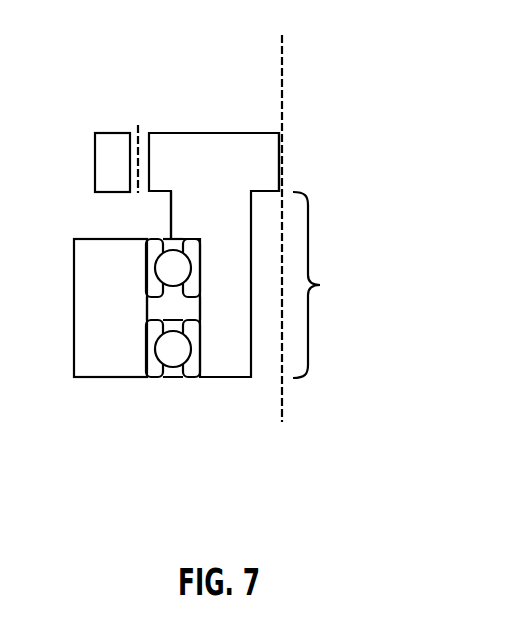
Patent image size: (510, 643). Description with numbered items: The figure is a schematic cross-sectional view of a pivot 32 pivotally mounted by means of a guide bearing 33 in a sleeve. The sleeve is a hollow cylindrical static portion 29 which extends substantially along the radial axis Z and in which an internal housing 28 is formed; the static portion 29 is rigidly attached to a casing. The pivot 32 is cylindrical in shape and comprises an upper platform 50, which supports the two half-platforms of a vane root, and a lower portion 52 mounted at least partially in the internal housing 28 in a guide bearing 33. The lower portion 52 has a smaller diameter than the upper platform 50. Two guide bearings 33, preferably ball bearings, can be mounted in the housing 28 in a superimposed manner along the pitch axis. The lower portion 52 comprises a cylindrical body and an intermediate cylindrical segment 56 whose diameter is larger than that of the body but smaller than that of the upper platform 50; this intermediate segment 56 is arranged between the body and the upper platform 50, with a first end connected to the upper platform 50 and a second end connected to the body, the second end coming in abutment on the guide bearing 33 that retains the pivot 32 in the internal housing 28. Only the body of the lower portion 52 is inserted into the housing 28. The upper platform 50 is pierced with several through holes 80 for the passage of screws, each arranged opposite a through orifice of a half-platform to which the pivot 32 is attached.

The internal housing 28 is at (168, 308).
The hollow cylindrical static portion 29 is at (88, 302).
The pivot 32 is at (201, 160).
The guide bearing 33 is at (175, 379).
The upper platform 50 is at (243, 158).
The lower portion 52 is at (322, 286).
The intermediate cylindrical segment 56 is at (168, 218).
The through hole 80 is at (132, 138).
The radial axis Z is at (283, 52).